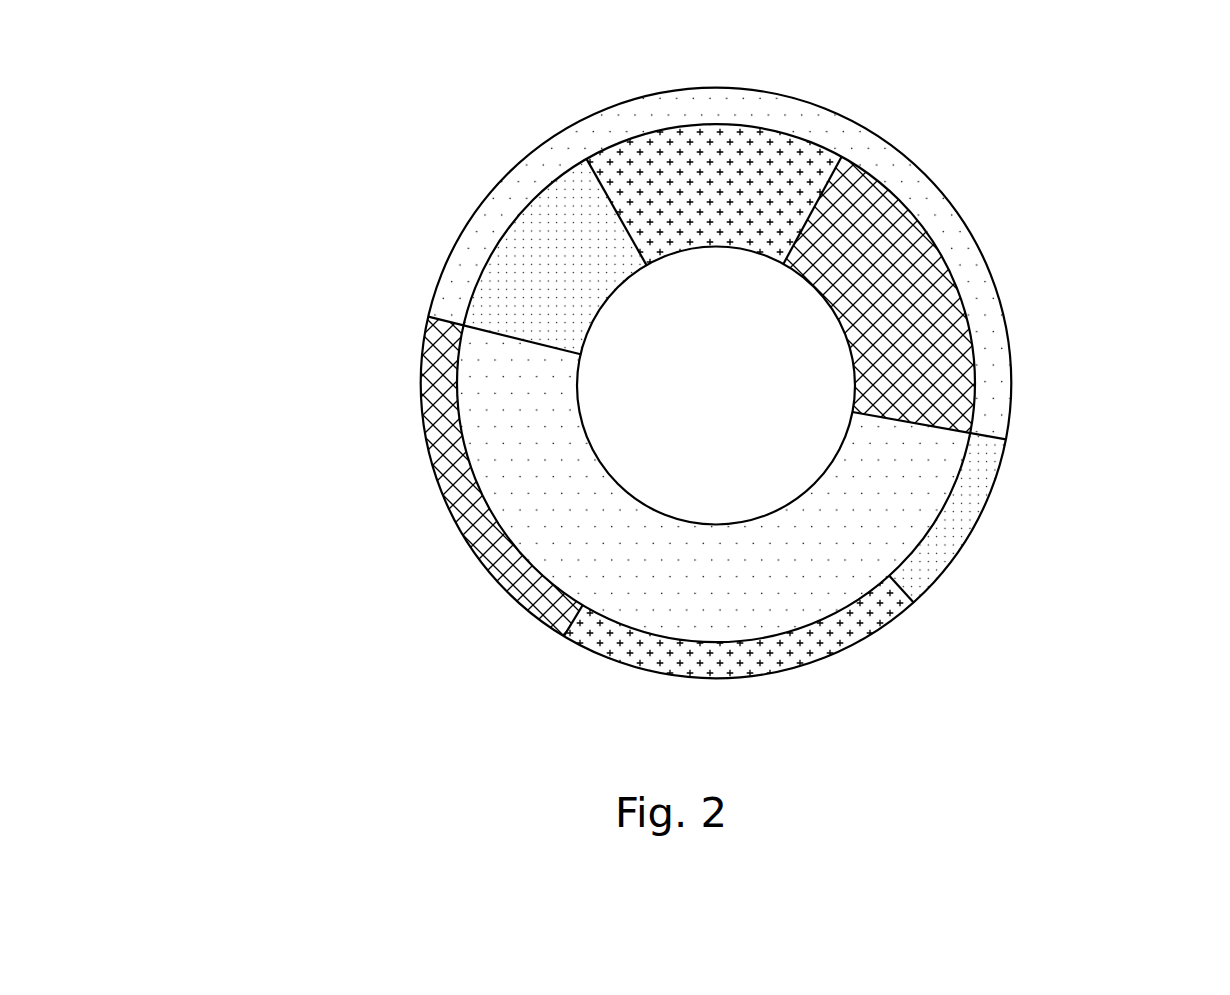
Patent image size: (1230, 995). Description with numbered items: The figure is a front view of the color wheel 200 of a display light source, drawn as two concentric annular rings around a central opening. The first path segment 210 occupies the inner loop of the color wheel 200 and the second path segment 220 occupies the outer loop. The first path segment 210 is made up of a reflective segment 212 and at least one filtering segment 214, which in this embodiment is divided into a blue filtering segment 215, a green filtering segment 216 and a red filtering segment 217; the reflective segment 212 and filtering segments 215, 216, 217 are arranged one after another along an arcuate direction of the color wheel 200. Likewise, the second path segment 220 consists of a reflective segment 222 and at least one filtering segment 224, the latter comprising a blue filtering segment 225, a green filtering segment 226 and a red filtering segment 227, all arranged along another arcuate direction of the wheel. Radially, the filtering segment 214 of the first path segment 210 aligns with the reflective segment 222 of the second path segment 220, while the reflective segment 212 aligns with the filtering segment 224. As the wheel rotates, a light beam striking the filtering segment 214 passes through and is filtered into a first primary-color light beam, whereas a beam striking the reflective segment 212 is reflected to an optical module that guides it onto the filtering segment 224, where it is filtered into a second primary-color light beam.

The color wheel 200 is at (1151, 143).
The first path segment 210 is at (228, 193).
The reflective segment 212 is at (488, 423).
The filtering segment 214 is at (305, 115).
The blue filtering segment 215 is at (512, 280).
The green filtering segment 216 is at (645, 168).
The red filtering segment 217 is at (883, 205).
The second path segment 220 is at (1153, 352).
The reflective segment 222 is at (988, 343).
The filtering segment 224 is at (1077, 545).
The blue filtering segment 225 is at (957, 520).
The green filtering segment 226 is at (813, 647).
The red filtering segment 227 is at (543, 617).